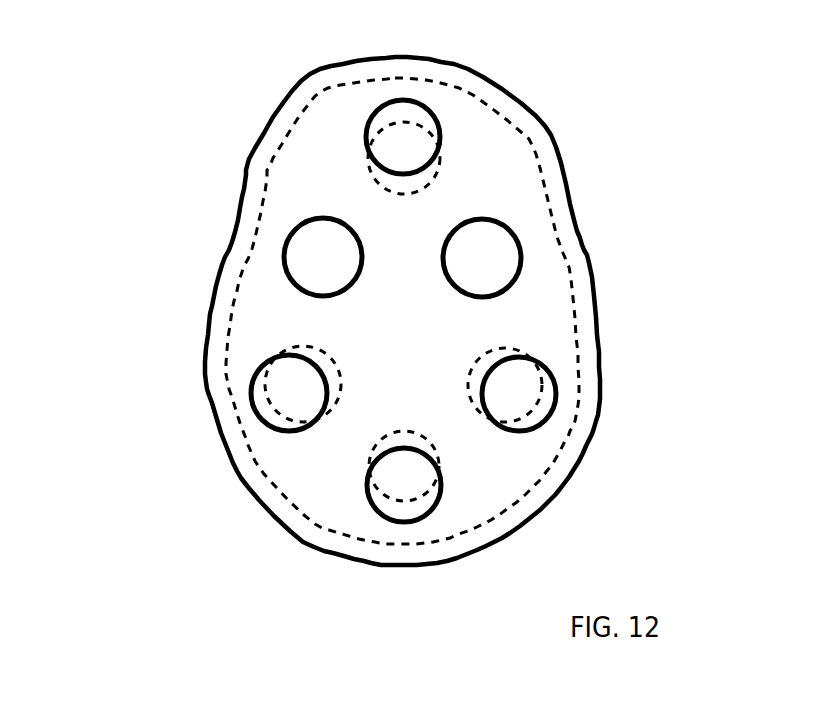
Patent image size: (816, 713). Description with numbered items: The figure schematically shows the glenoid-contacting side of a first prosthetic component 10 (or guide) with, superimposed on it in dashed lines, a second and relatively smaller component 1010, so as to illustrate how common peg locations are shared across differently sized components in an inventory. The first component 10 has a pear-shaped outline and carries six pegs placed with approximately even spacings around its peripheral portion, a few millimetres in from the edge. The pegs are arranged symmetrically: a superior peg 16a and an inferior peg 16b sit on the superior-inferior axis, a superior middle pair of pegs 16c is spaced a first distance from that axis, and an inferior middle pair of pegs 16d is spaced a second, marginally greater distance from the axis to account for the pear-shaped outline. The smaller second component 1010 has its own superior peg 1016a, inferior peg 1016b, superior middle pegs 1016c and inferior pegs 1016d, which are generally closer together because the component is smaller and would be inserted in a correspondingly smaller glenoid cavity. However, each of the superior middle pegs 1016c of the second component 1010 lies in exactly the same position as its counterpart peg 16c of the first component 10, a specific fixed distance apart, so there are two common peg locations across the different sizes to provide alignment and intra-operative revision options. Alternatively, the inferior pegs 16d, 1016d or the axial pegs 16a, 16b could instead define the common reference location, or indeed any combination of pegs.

The component 10 is at (582, 129).
The second component 1010 is at (578, 259).
The superior peg 16a is at (418, 112).
The superior peg of the second component 1016a is at (418, 178).
The inferior peg 16b is at (396, 487).
The inferior peg of the second component 1016b is at (427, 441).
The superior middle pair of pegs 16c is at (487, 283).
The superior middle pegs of the second component 1016c is at (462, 227).
The inferior middle pair of pegs 16d is at (545, 394).
The inferior pegs of the second component 1016d is at (332, 357).